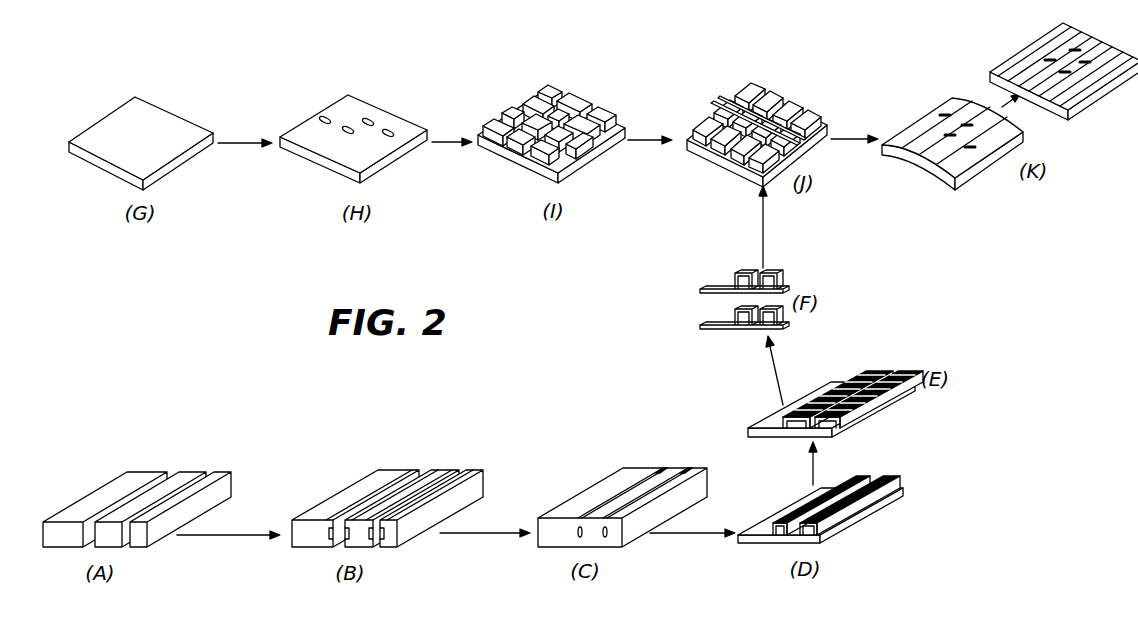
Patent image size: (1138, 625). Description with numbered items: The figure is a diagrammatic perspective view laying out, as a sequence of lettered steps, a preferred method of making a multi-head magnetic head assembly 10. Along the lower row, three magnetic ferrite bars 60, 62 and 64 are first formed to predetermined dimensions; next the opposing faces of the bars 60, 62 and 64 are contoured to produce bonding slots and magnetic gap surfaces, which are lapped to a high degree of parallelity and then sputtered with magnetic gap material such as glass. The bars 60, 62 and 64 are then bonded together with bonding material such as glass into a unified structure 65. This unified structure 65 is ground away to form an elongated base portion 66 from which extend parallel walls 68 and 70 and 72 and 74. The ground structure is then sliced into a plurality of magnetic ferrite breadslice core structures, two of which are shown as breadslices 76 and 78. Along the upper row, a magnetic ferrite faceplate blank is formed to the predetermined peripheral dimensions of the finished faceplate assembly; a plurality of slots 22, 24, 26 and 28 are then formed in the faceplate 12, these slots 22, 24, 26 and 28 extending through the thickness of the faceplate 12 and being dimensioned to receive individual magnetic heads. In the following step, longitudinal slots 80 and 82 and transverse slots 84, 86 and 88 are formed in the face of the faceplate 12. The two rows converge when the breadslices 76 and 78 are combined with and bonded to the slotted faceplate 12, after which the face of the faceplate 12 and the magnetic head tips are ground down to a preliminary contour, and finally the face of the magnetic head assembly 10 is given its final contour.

The magnetic head assembly 10 is at (915, 110).
The faceplate 12 is at (150, 100).
The slot 22 is at (320, 117).
The slot 24 is at (347, 126).
The slot 26 is at (368, 119).
The slot 28 is at (389, 129).
The magnetic ferrite bar 60 is at (140, 470).
The magnetic ferrite bar 62 is at (190, 470).
The magnetic ferrite bar 64 is at (225, 468).
The unified structure 65 is at (643, 463).
The elongated base portion 66 is at (740, 540).
The parallel wall 68 is at (772, 524).
The parallel wall 70 is at (797, 522).
The parallel wall 72 is at (880, 481).
The parallel wall 74 is at (900, 489).
The breadslice core structure 76 is at (710, 117).
The breadslice core structure 78 is at (728, 104).
The longitudinal slot 80 is at (516, 105).
The longitudinal slot 82 is at (498, 118).
The transverse slot 84 is at (560, 86).
The transverse slot 86 is at (582, 97).
The transverse slot 88 is at (612, 110).